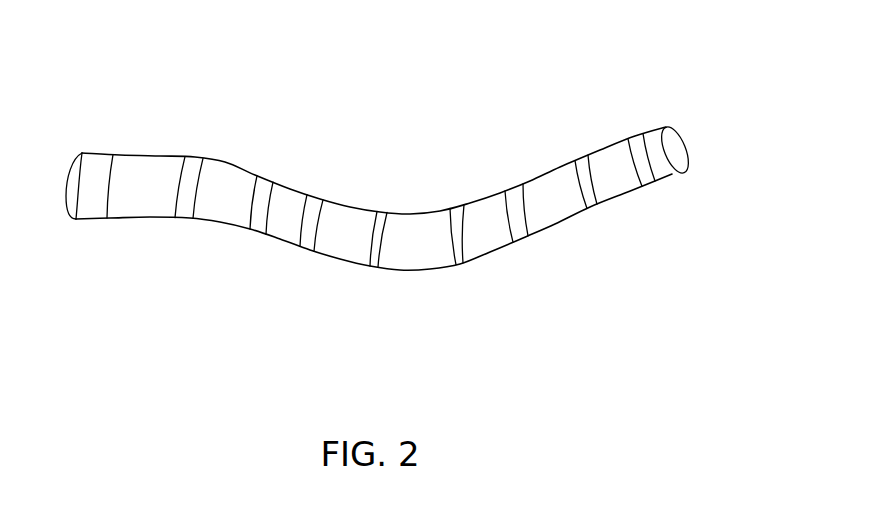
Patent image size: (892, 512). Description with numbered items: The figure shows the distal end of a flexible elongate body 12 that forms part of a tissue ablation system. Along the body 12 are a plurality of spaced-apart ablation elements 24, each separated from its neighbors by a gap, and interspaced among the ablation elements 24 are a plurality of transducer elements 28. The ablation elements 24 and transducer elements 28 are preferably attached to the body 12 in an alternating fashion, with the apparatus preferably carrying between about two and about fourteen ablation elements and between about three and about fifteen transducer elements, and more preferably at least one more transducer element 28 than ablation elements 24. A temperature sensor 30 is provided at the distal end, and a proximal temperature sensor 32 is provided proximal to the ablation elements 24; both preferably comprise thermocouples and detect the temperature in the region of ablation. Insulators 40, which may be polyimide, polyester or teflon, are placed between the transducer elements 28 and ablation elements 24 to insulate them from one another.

The elongate body 12 is at (362, 74).
The ablation elements 24 is at (280, 200).
The transducer elements 28 is at (223, 203).
The temperature sensor 30 is at (675, 148).
The proximal temperature sensor 32 is at (140, 177).
The insulators 40 is at (300, 246).